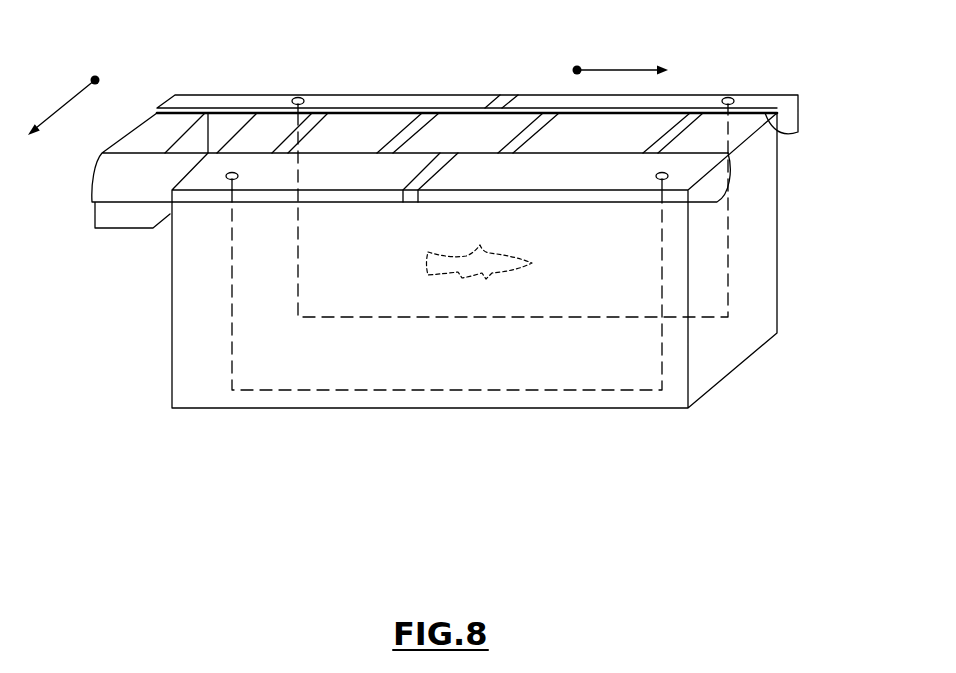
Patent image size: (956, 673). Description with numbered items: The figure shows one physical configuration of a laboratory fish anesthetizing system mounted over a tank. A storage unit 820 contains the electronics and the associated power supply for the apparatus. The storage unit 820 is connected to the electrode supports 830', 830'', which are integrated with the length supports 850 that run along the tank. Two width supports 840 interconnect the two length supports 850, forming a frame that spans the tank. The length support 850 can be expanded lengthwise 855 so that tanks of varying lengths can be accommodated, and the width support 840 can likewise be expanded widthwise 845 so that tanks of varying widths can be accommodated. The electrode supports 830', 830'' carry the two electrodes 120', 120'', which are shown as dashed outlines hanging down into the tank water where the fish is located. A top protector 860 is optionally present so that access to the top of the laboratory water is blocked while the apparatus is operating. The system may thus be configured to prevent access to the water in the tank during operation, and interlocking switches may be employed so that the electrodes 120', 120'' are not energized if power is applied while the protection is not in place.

The storage unit 820 is at (138, 131).
The electrode support 830' is at (477, 88).
The electrode support 830'' is at (553, 260).
The width support 840 is at (660, 112).
The widthwise expansion 845 is at (74, 91).
The length support 850 is at (510, 95).
The lengthwise expansion 855 is at (621, 59).
The top protector 860 is at (700, 114).
The electrode 120' is at (600, 208).
The electrode 120'' is at (556, 282).